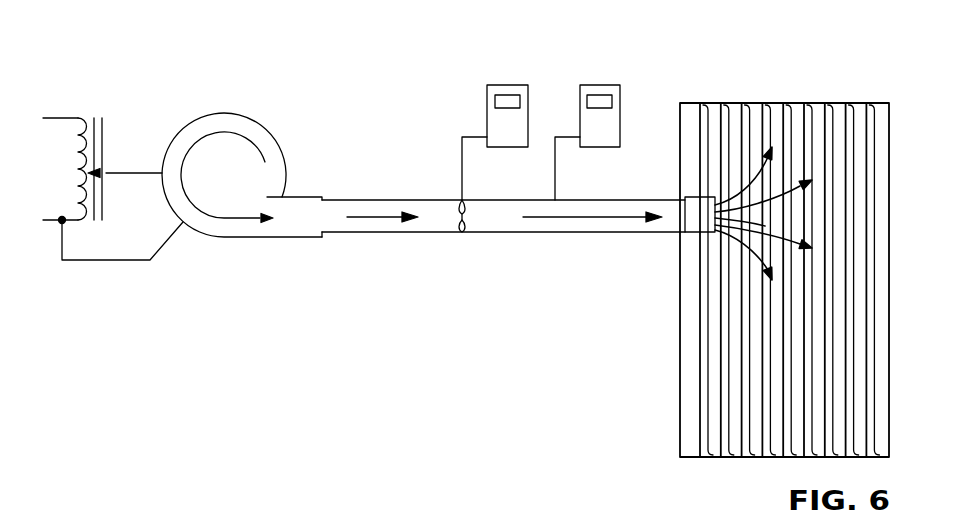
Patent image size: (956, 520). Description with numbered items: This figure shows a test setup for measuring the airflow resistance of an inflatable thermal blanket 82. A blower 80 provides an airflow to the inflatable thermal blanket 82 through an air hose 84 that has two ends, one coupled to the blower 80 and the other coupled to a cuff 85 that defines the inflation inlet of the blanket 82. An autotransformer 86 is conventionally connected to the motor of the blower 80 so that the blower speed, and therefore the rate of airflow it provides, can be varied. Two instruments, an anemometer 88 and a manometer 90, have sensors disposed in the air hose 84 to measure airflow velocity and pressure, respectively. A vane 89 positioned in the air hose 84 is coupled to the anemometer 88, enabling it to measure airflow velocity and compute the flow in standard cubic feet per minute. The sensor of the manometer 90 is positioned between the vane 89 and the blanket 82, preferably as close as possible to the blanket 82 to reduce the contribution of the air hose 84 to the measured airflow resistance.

The blower 80 is at (213, 111).
The inflatable thermal blanket 82 is at (773, 103).
The air hose 84 is at (357, 198).
The cuff 85 is at (711, 235).
The autotransformer 86 is at (73, 117).
The anemometer 88 is at (508, 84).
The vane 89 is at (467, 228).
The manometer 90 is at (598, 84).